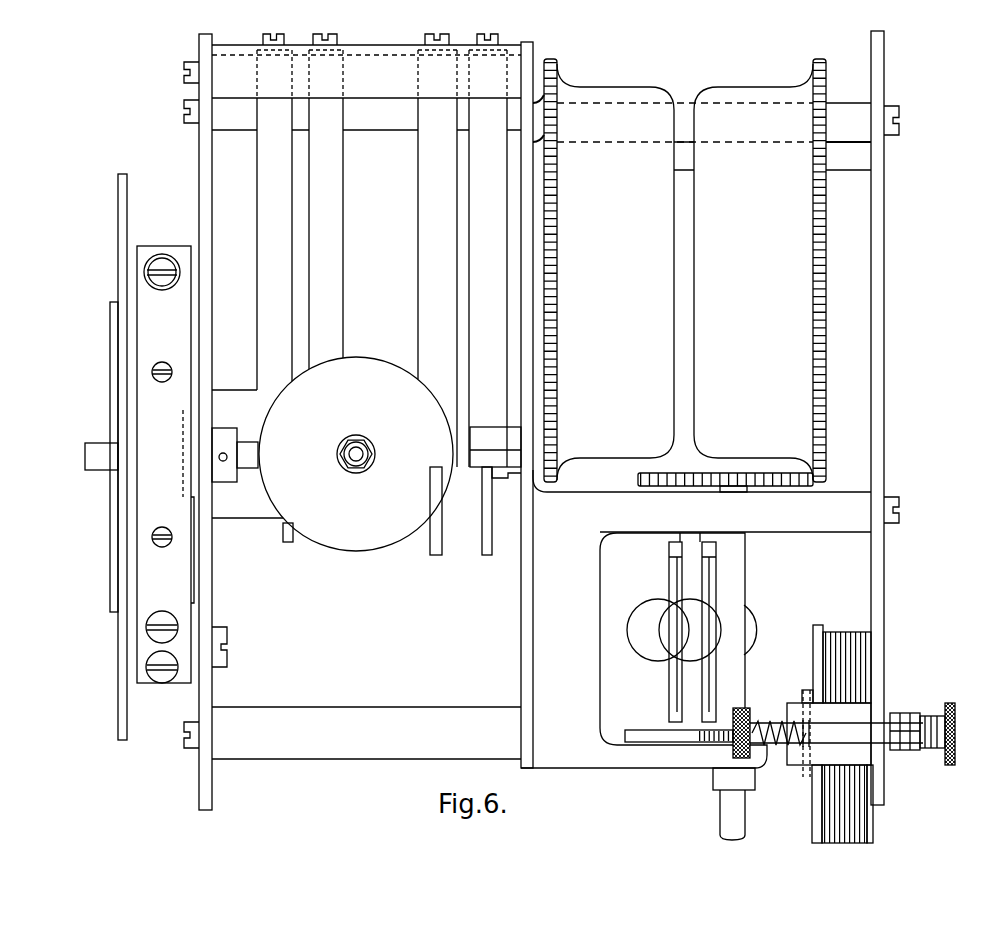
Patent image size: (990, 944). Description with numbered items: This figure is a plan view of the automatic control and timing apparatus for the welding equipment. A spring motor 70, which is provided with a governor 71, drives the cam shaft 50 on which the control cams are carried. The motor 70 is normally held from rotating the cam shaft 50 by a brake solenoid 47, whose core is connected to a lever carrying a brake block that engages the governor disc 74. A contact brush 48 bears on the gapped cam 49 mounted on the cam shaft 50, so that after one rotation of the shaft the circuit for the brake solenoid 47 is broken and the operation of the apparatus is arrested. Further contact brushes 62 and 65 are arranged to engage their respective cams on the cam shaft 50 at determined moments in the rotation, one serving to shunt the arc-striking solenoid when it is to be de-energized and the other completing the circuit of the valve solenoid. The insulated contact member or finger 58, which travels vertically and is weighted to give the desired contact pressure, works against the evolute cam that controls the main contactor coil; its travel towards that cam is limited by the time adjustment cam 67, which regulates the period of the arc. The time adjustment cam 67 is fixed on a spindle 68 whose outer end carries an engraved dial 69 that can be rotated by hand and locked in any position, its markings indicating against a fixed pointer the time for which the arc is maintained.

The brake solenoid 47 is at (847, 667).
The contact brush 48 is at (478, 190).
The cam 49 is at (482, 545).
The cam shaft 50 is at (468, 446).
The contact member or finger 58 is at (370, 466).
The contact brush 62 is at (318, 196).
The contact brush 65 is at (268, 152).
The time adjustment cam 67 is at (292, 545).
The spindle 68 is at (104, 463).
The engraved dial 69 is at (122, 643).
The spring motor 70 is at (679, 275).
The governor 71 is at (700, 628).
The governor disc 74 is at (652, 735).